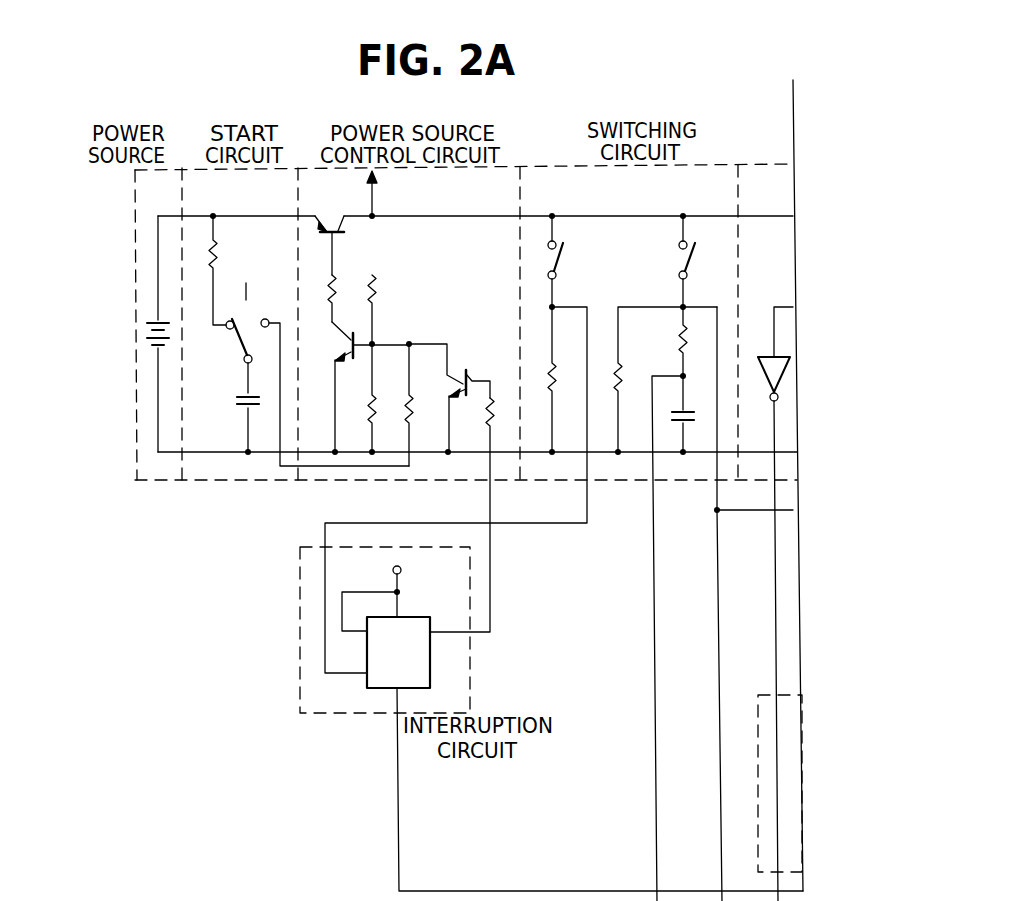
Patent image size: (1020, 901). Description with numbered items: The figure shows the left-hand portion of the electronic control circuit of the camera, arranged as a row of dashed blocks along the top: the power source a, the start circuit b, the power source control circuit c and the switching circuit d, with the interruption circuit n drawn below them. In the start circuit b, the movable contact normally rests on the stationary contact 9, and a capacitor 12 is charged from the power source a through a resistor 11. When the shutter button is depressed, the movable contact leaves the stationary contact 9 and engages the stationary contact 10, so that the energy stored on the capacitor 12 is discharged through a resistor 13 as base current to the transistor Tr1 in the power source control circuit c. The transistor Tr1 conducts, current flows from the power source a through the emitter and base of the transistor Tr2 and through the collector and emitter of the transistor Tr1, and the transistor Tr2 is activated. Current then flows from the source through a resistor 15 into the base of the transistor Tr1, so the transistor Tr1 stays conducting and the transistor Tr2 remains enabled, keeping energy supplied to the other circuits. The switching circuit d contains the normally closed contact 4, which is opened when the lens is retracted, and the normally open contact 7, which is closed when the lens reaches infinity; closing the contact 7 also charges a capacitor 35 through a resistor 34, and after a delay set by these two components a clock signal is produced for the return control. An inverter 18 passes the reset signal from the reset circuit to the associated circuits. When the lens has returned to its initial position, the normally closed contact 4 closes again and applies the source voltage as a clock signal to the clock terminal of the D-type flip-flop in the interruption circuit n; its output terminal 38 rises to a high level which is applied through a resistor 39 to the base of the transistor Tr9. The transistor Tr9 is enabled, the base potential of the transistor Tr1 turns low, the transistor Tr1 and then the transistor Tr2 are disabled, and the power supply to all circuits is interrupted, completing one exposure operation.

The normally closed contact 4 is at (560, 258).
The normally open contact 7 is at (678, 253).
The stationary contact 9 is at (246, 300).
The stationary contact 10 is at (267, 318).
The resistor 11 is at (216, 254).
The capacitor 12 is at (238, 400).
The resistor 13 is at (406, 393).
The resistor 15 is at (388, 284).
The inverter 18 is at (764, 355).
The resistor 34 is at (680, 333).
The capacitor 35 is at (690, 410).
The output terminal 38 is at (448, 636).
The resistor 39 is at (492, 402).
The transistor Tr1 is at (350, 340).
The transistor Tr2 is at (336, 226).
The transistor Tr9 is at (466, 370).
The power source a is at (146, 194).
The start circuit b is at (190, 176).
The power source control circuit c is at (306, 172).
The switching circuit d is at (541, 172).
The interruption circuit n is at (462, 704).